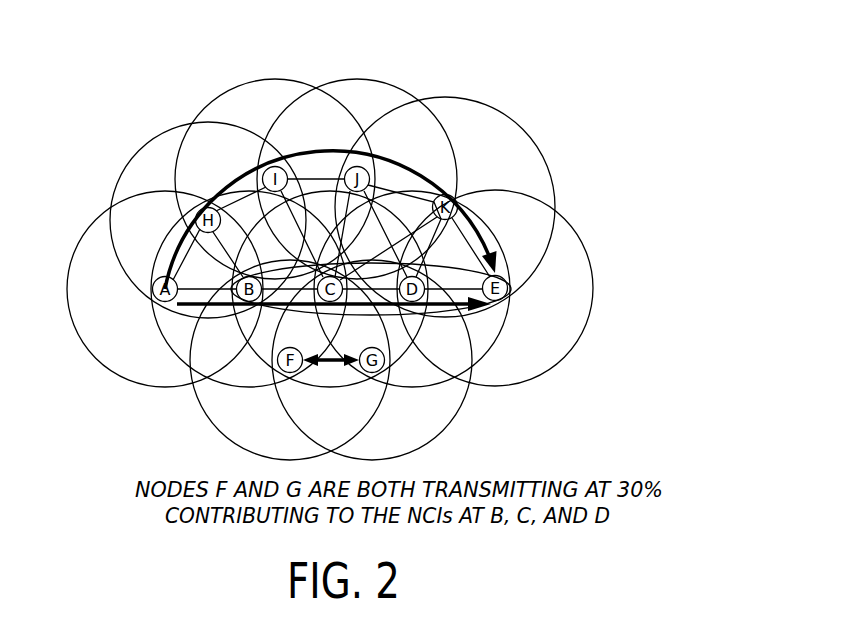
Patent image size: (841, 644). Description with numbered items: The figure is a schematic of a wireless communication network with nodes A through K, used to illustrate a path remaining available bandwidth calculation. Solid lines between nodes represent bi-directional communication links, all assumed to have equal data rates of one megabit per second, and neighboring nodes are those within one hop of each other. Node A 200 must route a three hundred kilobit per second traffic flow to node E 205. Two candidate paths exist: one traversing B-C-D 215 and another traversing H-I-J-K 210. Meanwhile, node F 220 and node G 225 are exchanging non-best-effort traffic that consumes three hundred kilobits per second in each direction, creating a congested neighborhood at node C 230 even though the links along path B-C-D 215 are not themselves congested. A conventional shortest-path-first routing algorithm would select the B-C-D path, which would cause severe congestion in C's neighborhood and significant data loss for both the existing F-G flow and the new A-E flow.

The node A 200 is at (152, 297).
The node E 205 is at (508, 288).
The candidate path H-I-J-K 210 is at (456, 160).
The candidate path B-C-D 215 is at (526, 382).
The node F 220 is at (210, 415).
The node G 225 is at (443, 428).
The congested neighborhood at node C 230 is at (198, 118).